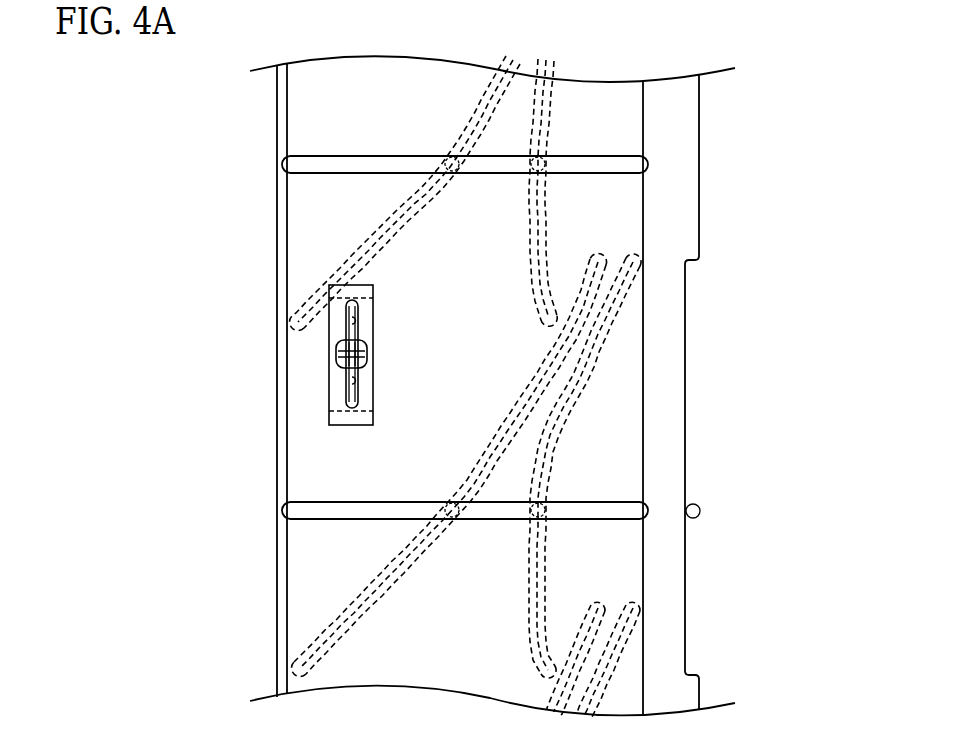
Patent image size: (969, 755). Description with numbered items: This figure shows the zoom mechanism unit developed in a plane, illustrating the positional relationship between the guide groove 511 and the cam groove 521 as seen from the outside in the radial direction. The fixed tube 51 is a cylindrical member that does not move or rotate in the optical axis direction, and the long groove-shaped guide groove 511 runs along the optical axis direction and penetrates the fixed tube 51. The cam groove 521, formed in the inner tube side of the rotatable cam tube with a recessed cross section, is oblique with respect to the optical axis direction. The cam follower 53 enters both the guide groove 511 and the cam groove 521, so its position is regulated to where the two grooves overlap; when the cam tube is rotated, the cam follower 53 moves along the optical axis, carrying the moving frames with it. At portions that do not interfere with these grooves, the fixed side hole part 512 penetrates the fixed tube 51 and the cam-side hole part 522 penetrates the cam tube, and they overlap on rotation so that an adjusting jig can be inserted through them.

The fixed tube 51 is at (305, 597).
The guide groove 511 is at (607, 162).
The fixed side hole part 512 is at (344, 393).
The cam groove 521 is at (190, 148).
The cam-side hole part 522 is at (345, 318).
The cam follower 53 is at (200, 216).